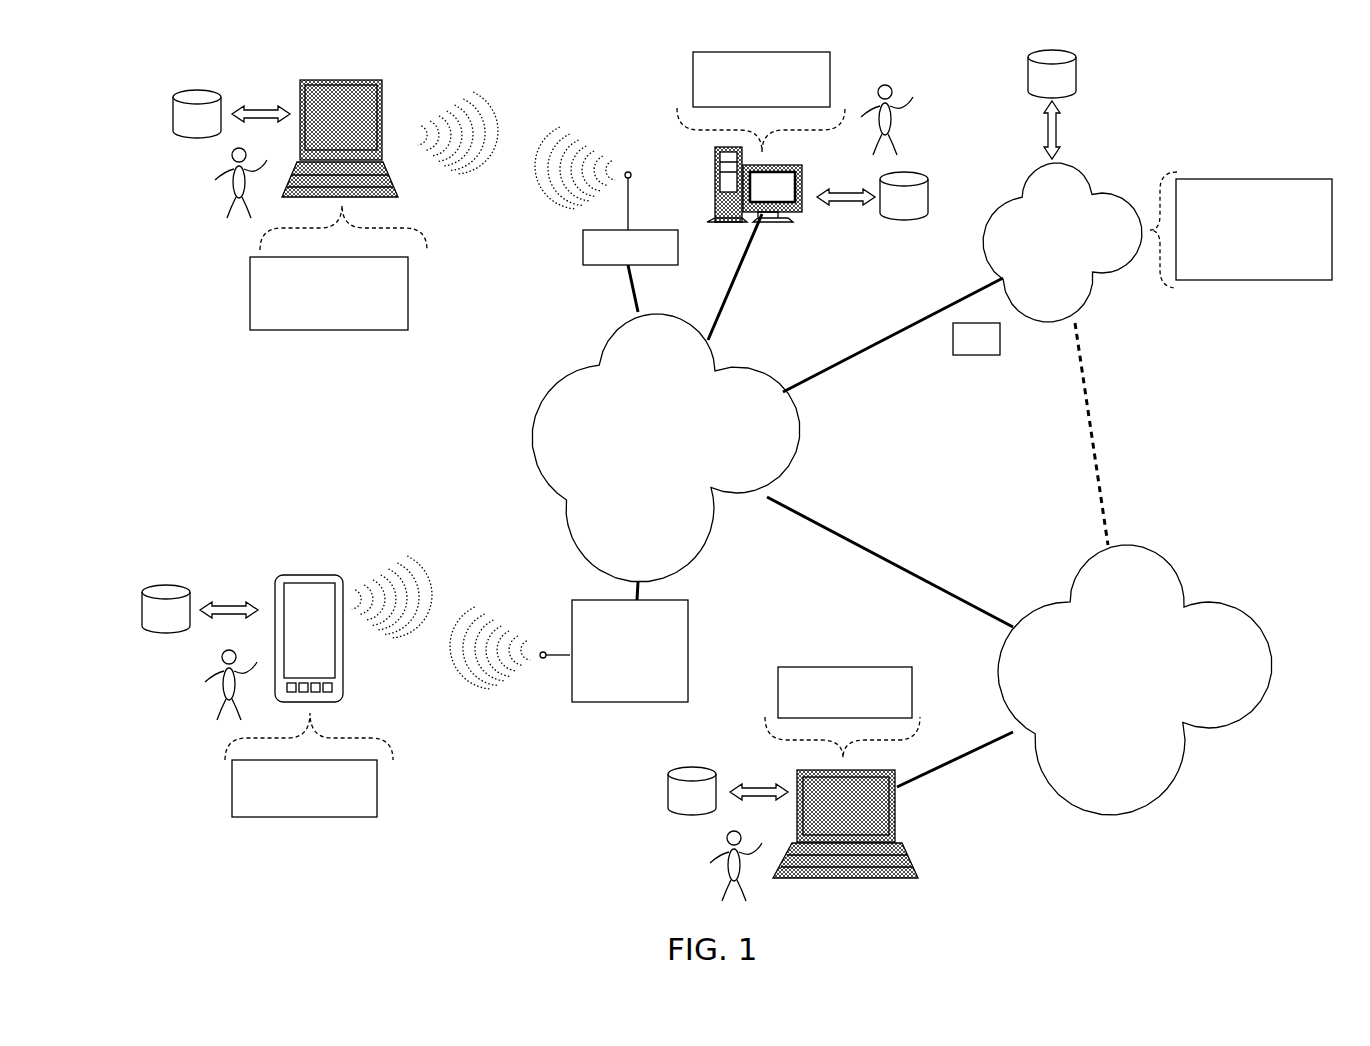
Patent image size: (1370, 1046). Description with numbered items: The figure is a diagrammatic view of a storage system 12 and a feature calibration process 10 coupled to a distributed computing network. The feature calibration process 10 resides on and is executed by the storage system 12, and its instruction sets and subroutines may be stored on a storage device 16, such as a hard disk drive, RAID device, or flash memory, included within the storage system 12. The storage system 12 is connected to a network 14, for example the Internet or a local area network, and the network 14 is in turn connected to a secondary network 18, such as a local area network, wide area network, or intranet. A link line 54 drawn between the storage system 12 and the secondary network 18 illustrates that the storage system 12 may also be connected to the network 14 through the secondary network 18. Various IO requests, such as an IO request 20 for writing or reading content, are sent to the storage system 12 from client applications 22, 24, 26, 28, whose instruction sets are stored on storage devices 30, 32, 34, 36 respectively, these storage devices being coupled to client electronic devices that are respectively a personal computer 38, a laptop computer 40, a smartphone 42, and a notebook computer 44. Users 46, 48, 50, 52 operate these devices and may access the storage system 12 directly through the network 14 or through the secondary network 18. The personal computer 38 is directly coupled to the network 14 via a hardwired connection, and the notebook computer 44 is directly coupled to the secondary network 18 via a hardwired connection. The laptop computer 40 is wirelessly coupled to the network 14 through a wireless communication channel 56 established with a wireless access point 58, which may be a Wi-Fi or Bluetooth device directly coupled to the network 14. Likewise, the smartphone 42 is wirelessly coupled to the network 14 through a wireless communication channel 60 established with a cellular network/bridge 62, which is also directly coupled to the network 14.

The feature calibration process 10 is at (1332, 222).
The storage system 12 is at (1062, 242).
The network 14 is at (666, 447).
The storage device 16 is at (1052, 74).
The secondary network 18 is at (1135, 680).
The IO request 20 is at (1000, 340).
The client application 22 is at (830, 80).
The client application 24 is at (408, 275).
The client application 26 is at (377, 778).
The client application 28 is at (912, 690).
The storage device 30 is at (904, 196).
The storage device 32 is at (197, 114).
The storage device 34 is at (166, 609).
The storage device 36 is at (692, 791).
The personal computer 38 is at (802, 182).
The laptop computer 40 is at (378, 105).
The smartphone 42 is at (343, 638).
The notebook computer 44 is at (895, 817).
The user 46 is at (903, 100).
The user 48 is at (203, 173).
The user 50 is at (203, 665).
The user 52 is at (698, 855).
The link line 54 is at (1088, 425).
The wireless communication channel 56 is at (528, 122).
The wireless access point 58 is at (582, 248).
The wireless communication channel 60 is at (455, 600).
The cellular network/bridge 62 is at (688, 615).